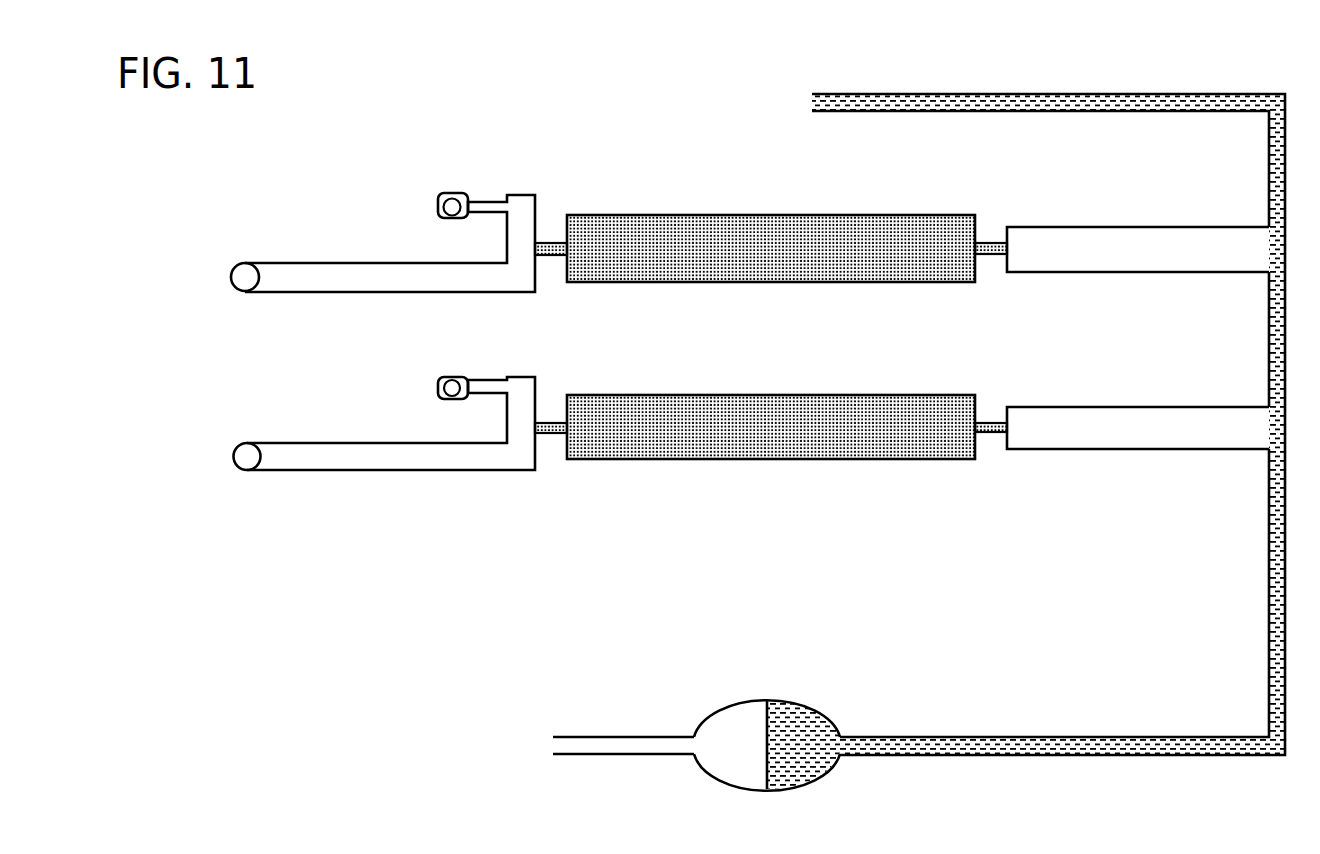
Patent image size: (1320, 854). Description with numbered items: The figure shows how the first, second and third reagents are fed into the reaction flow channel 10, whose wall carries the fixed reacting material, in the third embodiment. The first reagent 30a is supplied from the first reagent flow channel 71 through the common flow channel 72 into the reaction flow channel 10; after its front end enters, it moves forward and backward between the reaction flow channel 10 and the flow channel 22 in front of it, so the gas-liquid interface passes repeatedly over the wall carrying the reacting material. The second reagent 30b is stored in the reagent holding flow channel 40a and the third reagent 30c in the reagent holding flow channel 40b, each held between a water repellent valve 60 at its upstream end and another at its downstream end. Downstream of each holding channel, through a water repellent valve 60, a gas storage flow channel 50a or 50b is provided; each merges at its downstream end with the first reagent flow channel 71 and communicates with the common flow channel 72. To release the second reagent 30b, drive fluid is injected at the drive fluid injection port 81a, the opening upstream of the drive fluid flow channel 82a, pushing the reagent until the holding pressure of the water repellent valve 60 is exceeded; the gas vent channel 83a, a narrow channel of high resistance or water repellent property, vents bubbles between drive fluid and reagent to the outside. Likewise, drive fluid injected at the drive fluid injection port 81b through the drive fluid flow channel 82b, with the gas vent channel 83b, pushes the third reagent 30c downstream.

The reaction flow channel 10 is at (790, 700).
The flow channel 22 is at (610, 735).
The first reagent 30a is at (1131, 112).
The second reagent 30b is at (830, 275).
The third reagent 30c is at (802, 443).
The reagent holding flow channel 40a is at (676, 284).
The reagent holding flow channel 40b is at (668, 460).
The gas storage flow channel 50a is at (1117, 274).
The gas storage flow channel 50b is at (1056, 406).
The water repellent valve 60 is at (552, 243).
The first reagent flow channel 71 is at (1029, 112).
The common flow channel 72 is at (1270, 632).
The drive fluid injection port 81a is at (246, 270).
The drive fluid injection port 81b is at (247, 462).
The drive fluid flow channel 82a is at (320, 295).
The drive fluid flow channel 82b is at (352, 473).
The gas vent channel 83a is at (484, 194).
The gas vent channel 83b is at (484, 377).